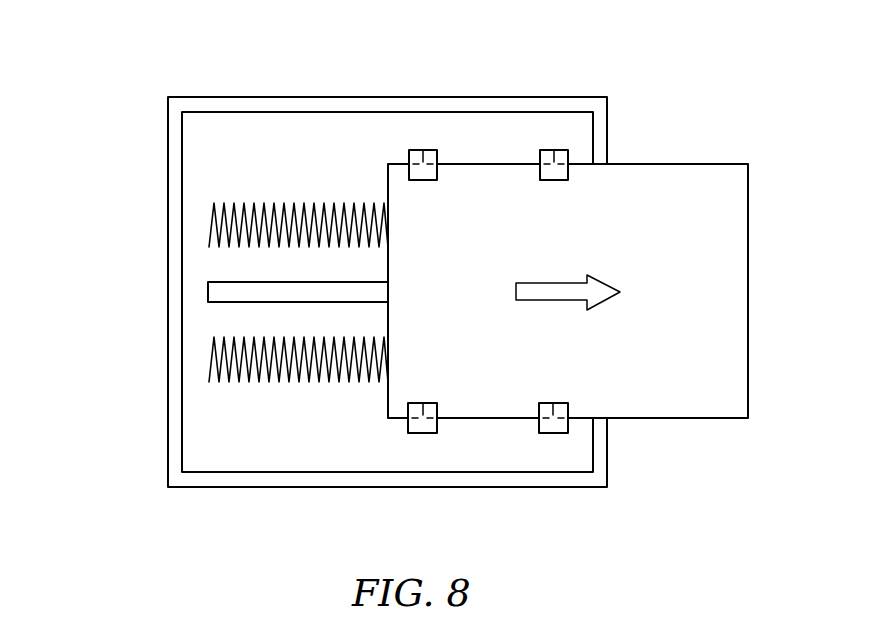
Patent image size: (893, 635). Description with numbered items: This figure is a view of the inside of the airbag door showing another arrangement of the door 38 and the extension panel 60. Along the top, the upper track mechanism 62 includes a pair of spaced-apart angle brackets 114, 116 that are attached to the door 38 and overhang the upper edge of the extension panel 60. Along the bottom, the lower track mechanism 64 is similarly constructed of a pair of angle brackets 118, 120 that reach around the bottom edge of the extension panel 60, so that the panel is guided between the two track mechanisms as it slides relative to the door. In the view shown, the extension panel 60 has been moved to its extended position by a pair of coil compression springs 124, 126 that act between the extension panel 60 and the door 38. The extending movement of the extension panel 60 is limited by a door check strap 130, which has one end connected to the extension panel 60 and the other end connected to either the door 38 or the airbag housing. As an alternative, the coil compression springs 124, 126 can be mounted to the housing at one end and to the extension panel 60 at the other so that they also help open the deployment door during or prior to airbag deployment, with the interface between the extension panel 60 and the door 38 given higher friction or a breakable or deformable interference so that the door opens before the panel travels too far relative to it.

The door 38 is at (509, 118).
The extension panel 60 is at (645, 190).
The upper track mechanism 62 is at (292, 152).
The lower track mechanism 64 is at (423, 430).
The angle bracket 114 is at (430, 150).
The angle bracket 116 is at (553, 150).
The angle bracket 118 is at (423, 403).
The angle bracket 120 is at (553, 403).
The coil compression spring 124 is at (237, 206).
The coil compression spring 126 is at (235, 380).
The door check strap 130 is at (253, 292).